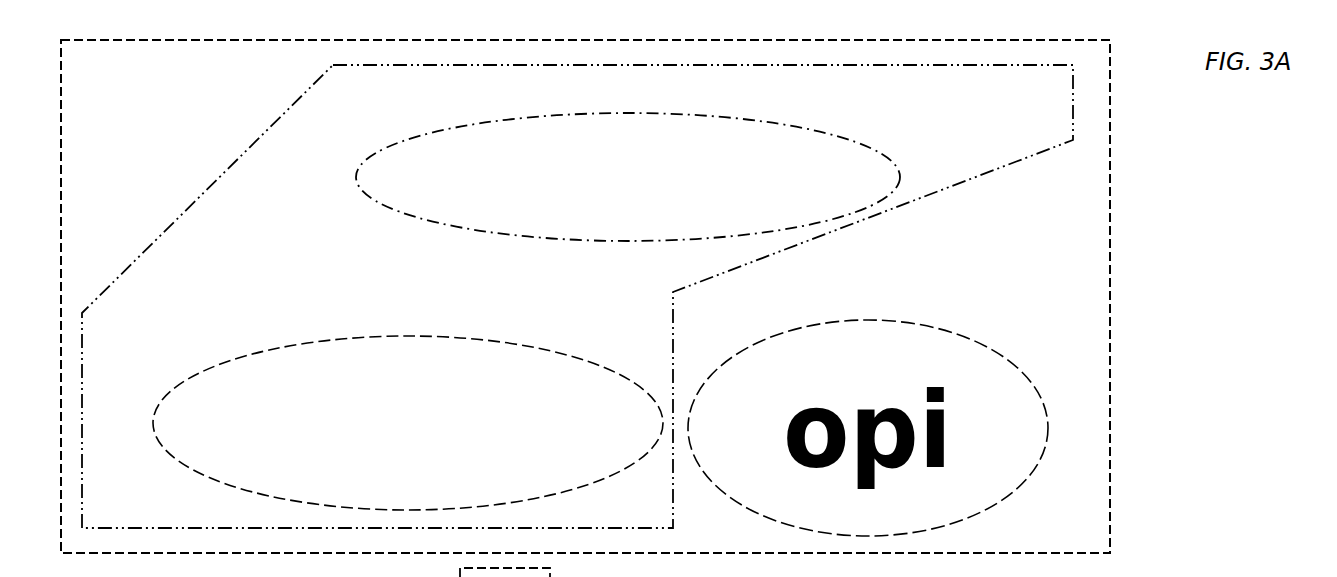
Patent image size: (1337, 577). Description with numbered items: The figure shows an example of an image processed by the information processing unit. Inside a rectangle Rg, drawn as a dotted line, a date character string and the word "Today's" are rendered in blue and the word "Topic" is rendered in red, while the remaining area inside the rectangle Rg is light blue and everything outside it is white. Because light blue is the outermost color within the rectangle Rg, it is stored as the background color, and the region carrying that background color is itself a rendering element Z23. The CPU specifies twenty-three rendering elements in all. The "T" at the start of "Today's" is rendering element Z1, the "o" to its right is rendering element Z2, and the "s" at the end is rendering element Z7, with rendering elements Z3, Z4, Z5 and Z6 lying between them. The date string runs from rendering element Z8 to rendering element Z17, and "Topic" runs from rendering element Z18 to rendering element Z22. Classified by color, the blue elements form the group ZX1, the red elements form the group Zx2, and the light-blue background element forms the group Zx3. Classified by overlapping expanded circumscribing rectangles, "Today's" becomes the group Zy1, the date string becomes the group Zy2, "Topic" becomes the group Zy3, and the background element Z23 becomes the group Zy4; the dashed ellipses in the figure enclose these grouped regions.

The rectangle Rg is at (1112, 84).
The rendering element Z23 is at (1100, 210).
The group Zx3 is at (585, 296).
The group Zy4 is at (585, 296).
The group ZX1 is at (213, 182).
The group Zy2 is at (885, 160).
The rendering element Z8 is at (456, 156).
The rendering element Z17 is at (805, 156).
The group Zy1 is at (359, 338).
The rendering element Z1 is at (230, 385).
The rendering element Z2 is at (303, 402).
The rendering element Z3 is at (397, 385).
The rendering element Z4 is at (455, 405).
The rendering element Z5 is at (500, 405).
The rendering element Z6 is at (568, 385).
The rendering element Z7 is at (620, 405).
The group Zx2 is at (930, 328).
The group Zy3 is at (868, 428).
The rendering element Z18 is at (760, 390).
The rendering element Z22 is at (1008, 410).